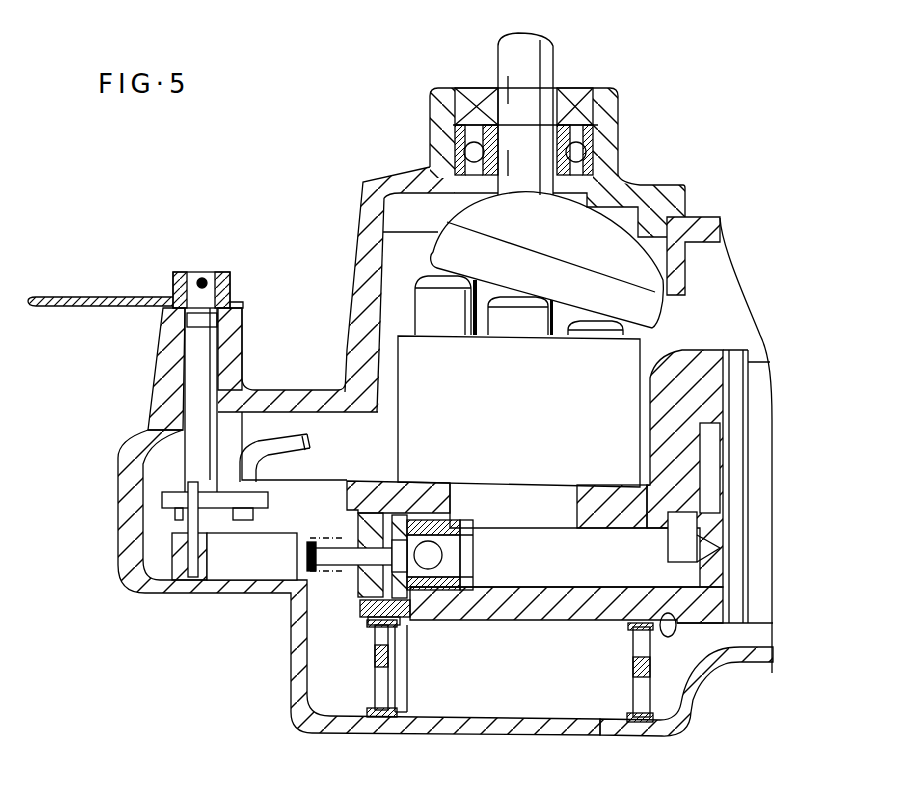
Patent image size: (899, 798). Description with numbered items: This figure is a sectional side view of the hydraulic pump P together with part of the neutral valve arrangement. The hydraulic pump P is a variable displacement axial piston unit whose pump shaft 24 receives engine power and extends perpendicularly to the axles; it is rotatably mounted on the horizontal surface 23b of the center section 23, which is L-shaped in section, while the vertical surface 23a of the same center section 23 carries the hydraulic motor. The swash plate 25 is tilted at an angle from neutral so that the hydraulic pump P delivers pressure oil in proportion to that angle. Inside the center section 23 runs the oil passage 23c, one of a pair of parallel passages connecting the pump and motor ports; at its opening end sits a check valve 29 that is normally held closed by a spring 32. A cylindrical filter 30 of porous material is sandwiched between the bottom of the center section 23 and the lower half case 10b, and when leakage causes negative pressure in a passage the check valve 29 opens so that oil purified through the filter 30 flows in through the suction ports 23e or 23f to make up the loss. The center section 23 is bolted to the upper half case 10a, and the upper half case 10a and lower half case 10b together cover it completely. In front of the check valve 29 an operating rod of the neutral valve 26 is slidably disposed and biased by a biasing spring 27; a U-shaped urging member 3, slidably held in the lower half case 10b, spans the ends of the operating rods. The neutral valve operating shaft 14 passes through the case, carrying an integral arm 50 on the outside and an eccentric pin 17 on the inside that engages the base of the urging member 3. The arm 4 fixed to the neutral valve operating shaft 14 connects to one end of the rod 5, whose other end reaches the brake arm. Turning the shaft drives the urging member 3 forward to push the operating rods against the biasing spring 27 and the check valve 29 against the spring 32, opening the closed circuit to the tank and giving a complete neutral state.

The pump shaft 24 is at (562, 62).
The swash plate 25 is at (436, 244).
The neutral valve 26 is at (412, 494).
The biasing spring 27 is at (320, 575).
The check valve 29 is at (400, 608).
The spring 32 is at (467, 555).
The upper half case 10a is at (355, 287).
The lower half case 10b is at (290, 665).
The arm 50 is at (94, 296).
The neutral valve operating shaft 14 is at (190, 392).
The rod 5 is at (310, 456).
The arm 4 is at (268, 497).
The urging member 3 is at (248, 565).
The pin 17 is at (192, 590).
The center section 23 is at (739, 339).
The vertical surface 23a is at (778, 375).
The horizontal surface 23b is at (588, 493).
The oil passage 23c is at (705, 695).
The suction port 23e is at (400, 660).
The suction port 23f is at (420, 764).
The filter 30 is at (372, 680).
The hydraulic pump P is at (675, 328).